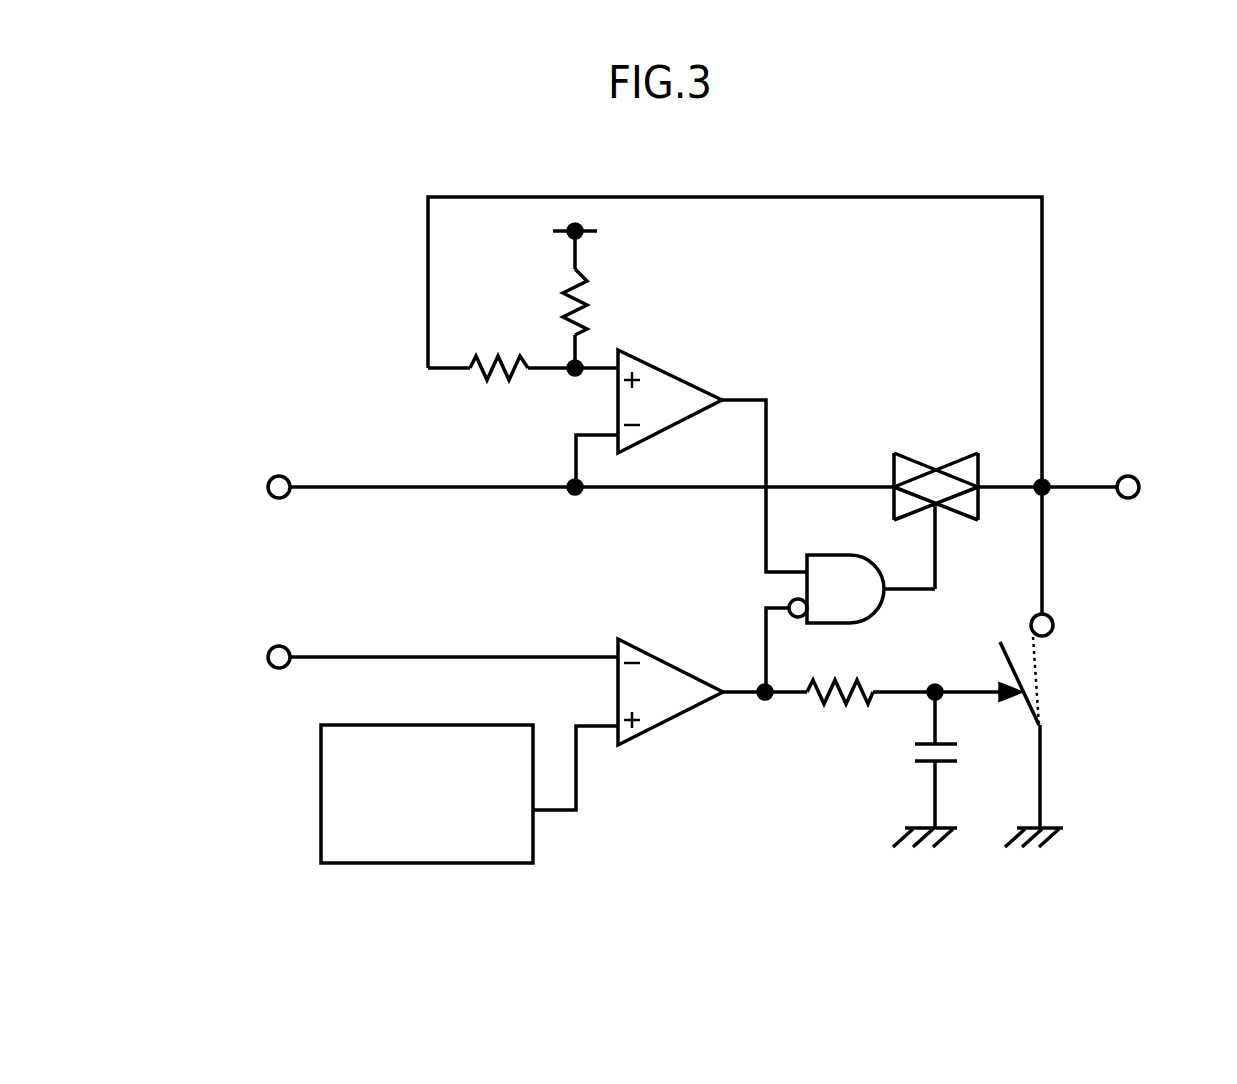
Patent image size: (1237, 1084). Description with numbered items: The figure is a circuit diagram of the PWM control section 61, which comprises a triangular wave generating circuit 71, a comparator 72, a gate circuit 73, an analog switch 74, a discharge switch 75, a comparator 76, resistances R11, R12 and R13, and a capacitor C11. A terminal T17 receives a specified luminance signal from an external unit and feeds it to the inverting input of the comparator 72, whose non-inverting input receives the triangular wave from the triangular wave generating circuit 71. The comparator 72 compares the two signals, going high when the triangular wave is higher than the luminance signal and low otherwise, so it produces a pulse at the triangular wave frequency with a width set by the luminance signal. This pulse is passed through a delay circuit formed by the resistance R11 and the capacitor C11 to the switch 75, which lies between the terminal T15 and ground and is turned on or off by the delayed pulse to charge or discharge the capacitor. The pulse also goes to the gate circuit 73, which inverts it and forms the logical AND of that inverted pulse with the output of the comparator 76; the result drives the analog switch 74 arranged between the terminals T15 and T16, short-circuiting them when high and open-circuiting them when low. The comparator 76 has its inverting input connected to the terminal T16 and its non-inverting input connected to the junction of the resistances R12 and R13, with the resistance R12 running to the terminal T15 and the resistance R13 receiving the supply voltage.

The PWM control section 61 is at (277, 168).
The triangular wave generating circuit 71 is at (320, 863).
The comparator 72 is at (658, 725).
The gate circuit 73 is at (850, 553).
The analog switch 74 is at (935, 471).
The discharge switch 75 is at (1060, 668).
The comparator 76 is at (662, 368).
The resistance R11 is at (840, 712).
The resistance R12 is at (523, 388).
The resistance R13 is at (547, 296).
The capacitor C11 is at (953, 769).
The terminal T15 is at (1134, 481).
The terminal T16 is at (272, 480).
The terminal T17 is at (272, 651).